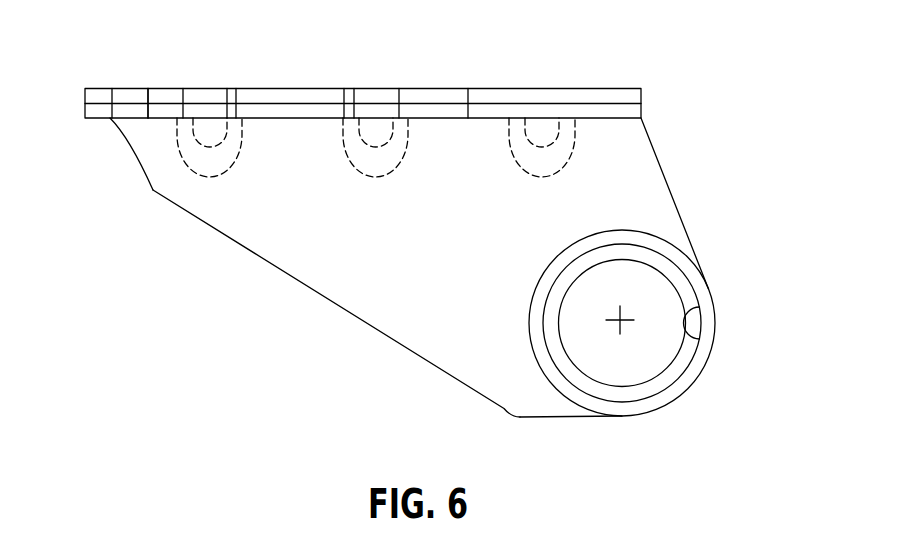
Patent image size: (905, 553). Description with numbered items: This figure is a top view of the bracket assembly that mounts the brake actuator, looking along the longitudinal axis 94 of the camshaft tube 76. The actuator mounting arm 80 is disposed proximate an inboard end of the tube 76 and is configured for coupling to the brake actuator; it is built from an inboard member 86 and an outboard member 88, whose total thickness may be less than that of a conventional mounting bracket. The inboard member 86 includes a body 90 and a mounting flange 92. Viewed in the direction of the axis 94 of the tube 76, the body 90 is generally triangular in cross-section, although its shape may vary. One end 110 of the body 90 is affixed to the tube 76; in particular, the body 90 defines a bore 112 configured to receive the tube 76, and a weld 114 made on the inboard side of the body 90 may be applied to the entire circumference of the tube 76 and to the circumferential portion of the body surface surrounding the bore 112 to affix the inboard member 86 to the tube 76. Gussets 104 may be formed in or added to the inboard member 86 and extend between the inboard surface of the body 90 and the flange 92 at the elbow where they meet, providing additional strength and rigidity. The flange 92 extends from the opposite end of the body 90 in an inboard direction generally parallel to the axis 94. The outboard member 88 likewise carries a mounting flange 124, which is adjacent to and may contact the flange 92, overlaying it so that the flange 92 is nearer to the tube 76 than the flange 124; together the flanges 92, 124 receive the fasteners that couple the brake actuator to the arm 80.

The camshaft tube 76 is at (673, 362).
The actuator mounting arm 80 is at (664, 117).
The inboard member 86 is at (334, 319).
The outboard member 88 is at (297, 77).
The body 90 is at (297, 256).
The mounting flange 92 is at (148, 118).
The longitudinal axis 94 is at (622, 318).
The gussets 104 is at (375, 158).
The end 110 is at (572, 405).
The bore 112 is at (700, 343).
The weld 114 is at (683, 269).
The mounting flange 124 is at (148, 88).